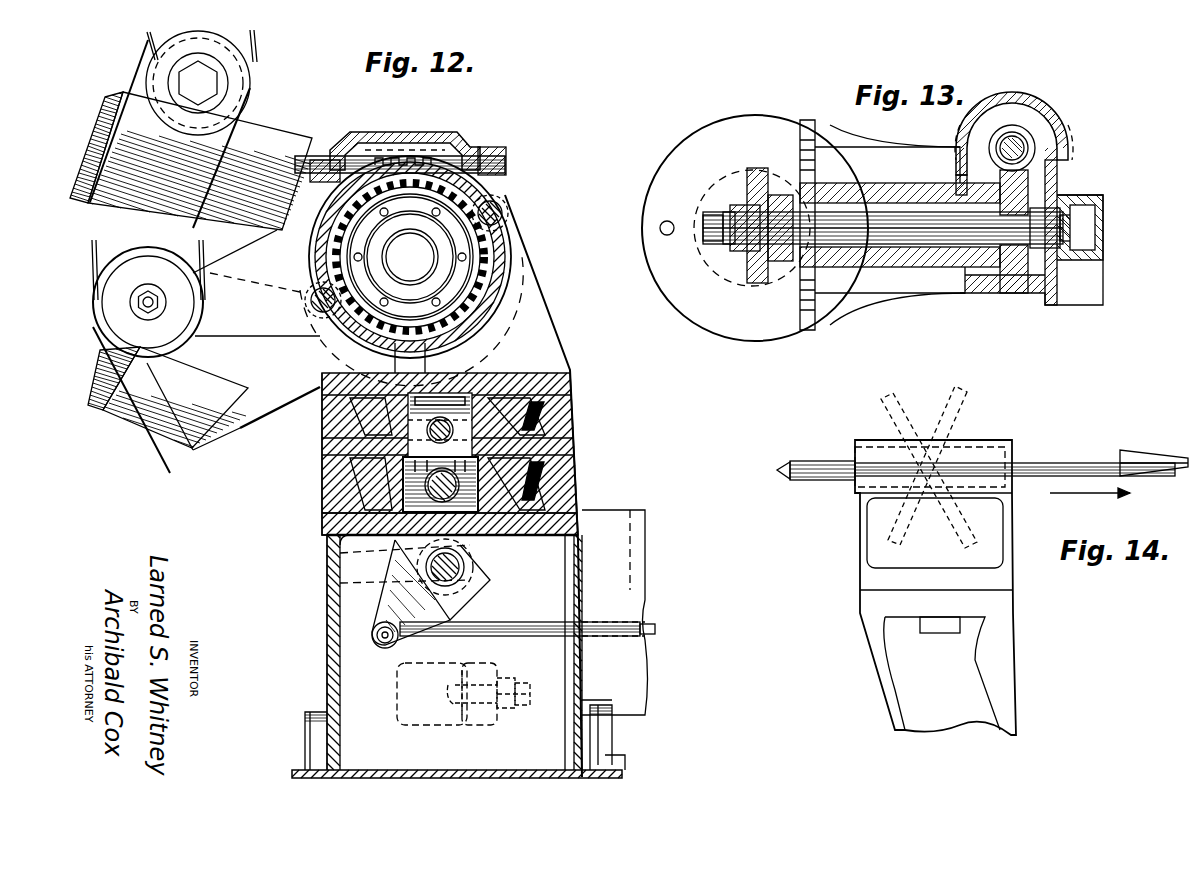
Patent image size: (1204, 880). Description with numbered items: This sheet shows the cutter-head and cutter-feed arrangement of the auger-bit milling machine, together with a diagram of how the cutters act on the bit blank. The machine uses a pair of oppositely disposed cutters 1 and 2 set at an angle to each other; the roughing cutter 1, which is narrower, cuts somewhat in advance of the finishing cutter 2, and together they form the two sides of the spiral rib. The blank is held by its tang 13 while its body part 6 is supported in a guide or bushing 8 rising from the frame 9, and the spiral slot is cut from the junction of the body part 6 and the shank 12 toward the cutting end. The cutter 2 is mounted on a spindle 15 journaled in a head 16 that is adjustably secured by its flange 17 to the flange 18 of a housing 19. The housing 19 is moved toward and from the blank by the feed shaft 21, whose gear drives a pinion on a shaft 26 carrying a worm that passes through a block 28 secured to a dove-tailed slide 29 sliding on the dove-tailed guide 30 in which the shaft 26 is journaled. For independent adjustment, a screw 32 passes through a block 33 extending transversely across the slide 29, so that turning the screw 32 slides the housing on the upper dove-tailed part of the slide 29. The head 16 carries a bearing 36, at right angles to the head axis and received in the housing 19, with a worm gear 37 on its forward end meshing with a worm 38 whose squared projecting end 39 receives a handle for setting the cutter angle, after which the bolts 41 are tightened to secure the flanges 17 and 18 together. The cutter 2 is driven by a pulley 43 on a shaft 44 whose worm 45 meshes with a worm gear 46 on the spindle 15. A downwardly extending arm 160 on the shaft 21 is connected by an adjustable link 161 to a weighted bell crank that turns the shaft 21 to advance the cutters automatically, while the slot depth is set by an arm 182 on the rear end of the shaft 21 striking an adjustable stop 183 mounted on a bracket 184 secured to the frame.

In FIG. 14, the roughing cutter 1 is at (962, 390).
In FIG. 13, the finishing cutter 2 is at (758, 280).
In FIG. 14, the finishing cutter 2 is at (915, 395).
In FIG. 14, the body part of the bit blank 6 is at (832, 460).
In FIG. 14, the guide or bushing 8 is at (880, 535).
In FIG. 12, the frame 9 is at (632, 568).
In FIG. 14, the shank part 12 is at (1060, 460).
In FIG. 14, the tang 13 is at (1150, 452).
In FIG. 13, the spindle 15 is at (915, 218).
In FIG. 12, the head 16 is at (270, 412).
In FIG. 13, the head 16 is at (905, 290).
In FIG. 13, the flange of the head 17 is at (773, 325).
In FIG. 12, the flange of the housing 18 is at (300, 285).
In FIG. 12, the housing 19 is at (505, 272).
In FIG. 12, the feed shaft 21 is at (465, 567).
In FIG. 12, the shaft 26 is at (322, 515).
In FIG. 12, the block 28 is at (405, 490).
In FIG. 12, the dove-tailed slide 29 is at (560, 448).
In FIG. 12, the dove-tailed guide 30 is at (560, 492).
In FIG. 12, the screw 32 is at (490, 378).
In FIG. 12, the block 33 is at (322, 460).
In FIG. 13, the bearing 36 is at (735, 175).
In FIG. 12, the worm gear 37 is at (470, 250).
In FIG. 12, the worm 38 is at (415, 160).
In FIG. 12, the squared end of the worm 39 is at (320, 160).
In FIG. 12, the bolts 41 is at (502, 208).
In FIG. 12, the pulley 43 is at (195, 322).
In FIG. 13, the pulley 43 is at (1020, 95).
In FIG. 12, the shaft 44 is at (160, 298).
In FIG. 13, the shaft 44 is at (1020, 140).
In FIG. 13, the worm 45 is at (1030, 140).
In FIG. 13, the worm gear 46 is at (1025, 175).
In FIG. 12, the arm 160 is at (445, 617).
In FIG. 12, the adjustable link 161 is at (550, 605).
In FIG. 12, the arm 182 is at (312, 605).
In FIG. 12, the adjustable stop 183 is at (447, 694).
In FIG. 12, the bracket 184 is at (478, 725).